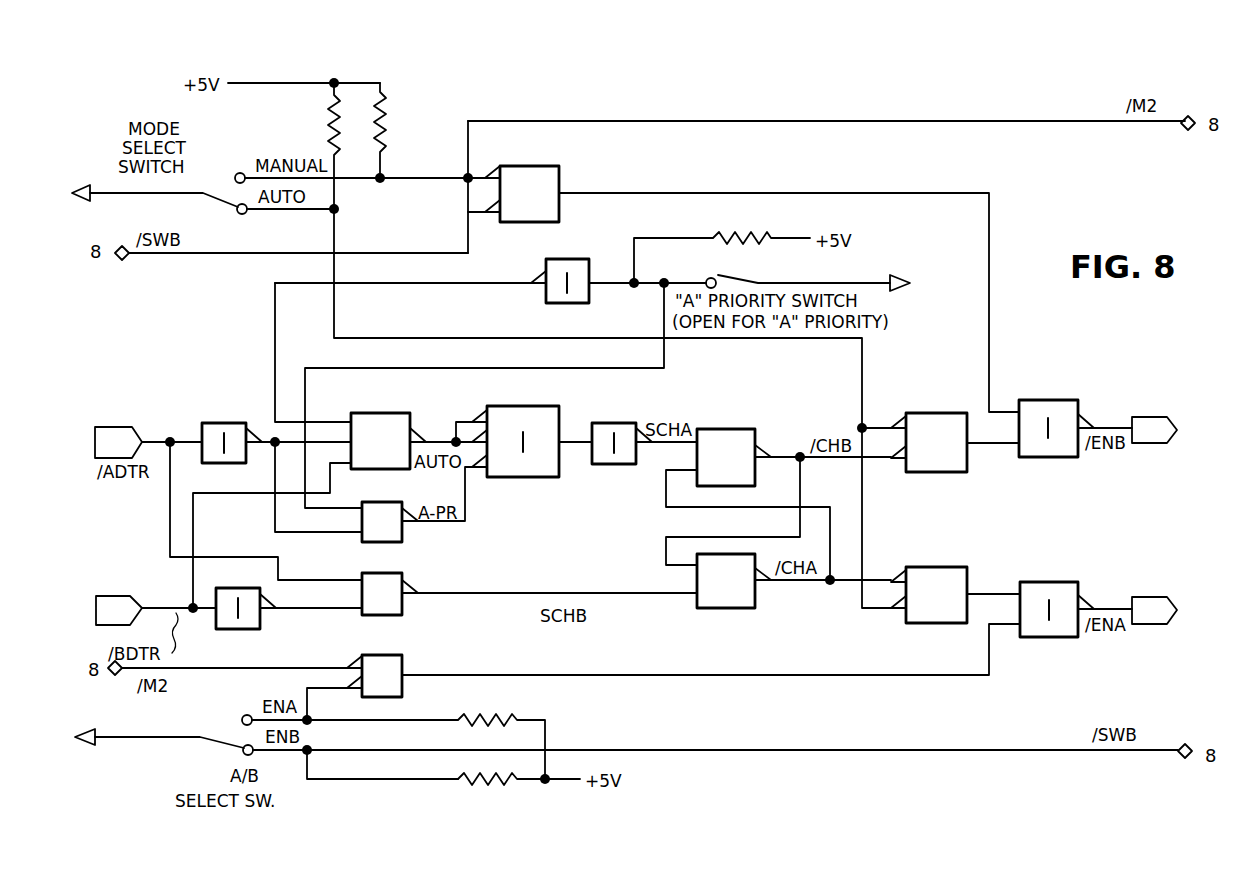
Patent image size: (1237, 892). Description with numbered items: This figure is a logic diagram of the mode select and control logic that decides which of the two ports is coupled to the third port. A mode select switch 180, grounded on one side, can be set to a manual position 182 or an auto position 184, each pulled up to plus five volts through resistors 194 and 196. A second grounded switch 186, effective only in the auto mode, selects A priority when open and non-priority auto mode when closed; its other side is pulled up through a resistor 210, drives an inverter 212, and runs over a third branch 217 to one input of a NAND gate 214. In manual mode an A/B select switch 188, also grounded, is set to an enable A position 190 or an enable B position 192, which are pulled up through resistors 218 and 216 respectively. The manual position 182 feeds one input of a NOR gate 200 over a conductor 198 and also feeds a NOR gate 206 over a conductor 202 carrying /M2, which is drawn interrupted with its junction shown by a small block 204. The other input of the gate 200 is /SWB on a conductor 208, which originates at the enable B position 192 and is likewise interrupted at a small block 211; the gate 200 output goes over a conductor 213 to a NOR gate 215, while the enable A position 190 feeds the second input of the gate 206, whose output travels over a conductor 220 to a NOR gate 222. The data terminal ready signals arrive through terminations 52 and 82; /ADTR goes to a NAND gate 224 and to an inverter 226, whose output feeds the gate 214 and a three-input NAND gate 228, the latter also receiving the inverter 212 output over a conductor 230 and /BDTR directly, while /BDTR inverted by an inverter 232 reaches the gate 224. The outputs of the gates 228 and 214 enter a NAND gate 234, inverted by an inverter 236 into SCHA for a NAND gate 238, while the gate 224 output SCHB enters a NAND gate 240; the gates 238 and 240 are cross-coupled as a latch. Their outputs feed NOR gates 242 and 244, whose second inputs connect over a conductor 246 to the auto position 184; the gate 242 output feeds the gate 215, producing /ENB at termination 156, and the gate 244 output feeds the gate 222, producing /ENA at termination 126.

The termination 52 is at (113, 426).
The termination 82 is at (118, 598).
The termination 126 is at (1177, 609).
The termination 156 is at (1161, 416).
The mode select switch 180 is at (205, 200).
The manual position 182 is at (236, 168).
The auto position 184 is at (246, 212).
The switch 186 is at (722, 276).
The A/B select switch 188 is at (210, 745).
The enable A position 190 is at (244, 720).
The enable B position 192 is at (252, 754).
The resistor 194 is at (386, 124).
The resistor 196 is at (332, 124).
The conductor 198 is at (404, 180).
The NOR gate 200 is at (561, 185).
The conductor 202 is at (764, 119).
The small block 204 is at (1180, 126).
The NOR gate 206 is at (409, 669).
The conductor 208 is at (208, 254).
The resistor 210 is at (758, 242).
The small block 211 is at (124, 258).
The inverter 212 is at (594, 298).
The conductor 213 is at (696, 200).
The NAND gate 214 is at (411, 530).
The NOR gate 215 is at (1040, 456).
The resistor 216 is at (462, 778).
The third branch 217 is at (398, 374).
The resistor 218 is at (462, 718).
The conductor 220 is at (596, 678).
The NOR gate 222 is at (1038, 638).
The NAND gate 224 is at (409, 609).
The inverter 226 is at (218, 464).
The NAND gate 228 is at (400, 426).
The conductor 230 is at (472, 286).
The inverter 232 is at (227, 628).
The NAND gate 234 is at (520, 478).
The inverter 236 is at (602, 462).
The NAND gate 238 is at (736, 480).
The NAND gate 240 is at (754, 604).
The NOR gate 242 is at (927, 472).
The NOR gate 244 is at (917, 623).
The conductor 246 is at (862, 398).